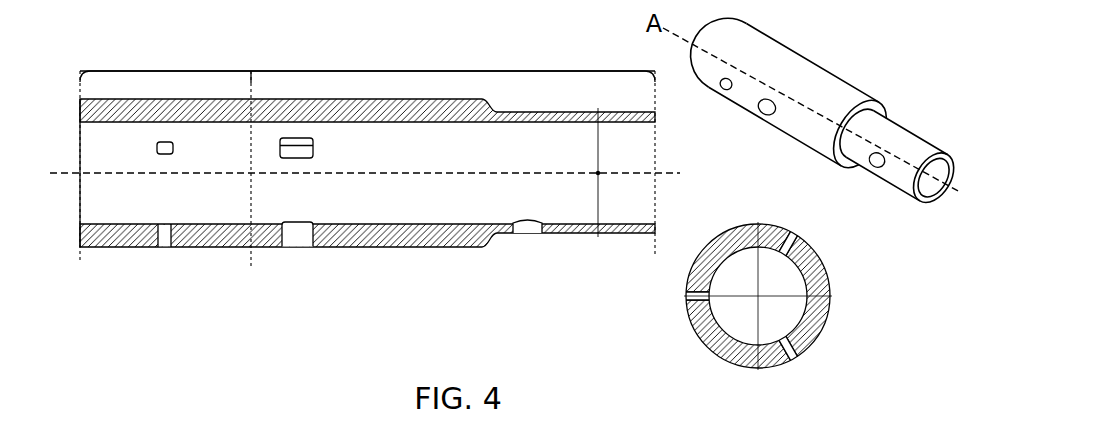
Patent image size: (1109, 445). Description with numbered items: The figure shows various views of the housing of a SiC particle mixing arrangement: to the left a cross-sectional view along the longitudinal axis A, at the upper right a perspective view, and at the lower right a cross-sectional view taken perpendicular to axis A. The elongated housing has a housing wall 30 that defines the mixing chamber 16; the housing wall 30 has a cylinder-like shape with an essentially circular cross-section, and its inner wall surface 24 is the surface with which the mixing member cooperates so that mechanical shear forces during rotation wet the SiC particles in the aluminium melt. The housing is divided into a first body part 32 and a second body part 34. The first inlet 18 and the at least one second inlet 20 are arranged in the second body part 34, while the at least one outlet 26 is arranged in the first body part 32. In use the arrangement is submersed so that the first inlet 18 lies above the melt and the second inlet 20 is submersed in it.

The mixing chamber 16 is at (367, 205).
The first inlet 18 is at (528, 229).
The second inlet 20 is at (293, 234).
The inner wall surface 24 is at (188, 223).
The outlet 26 is at (80, 153).
The housing wall 30 is at (220, 233).
The first body part 32 is at (166, 71).
The second body part 34 is at (452, 71).